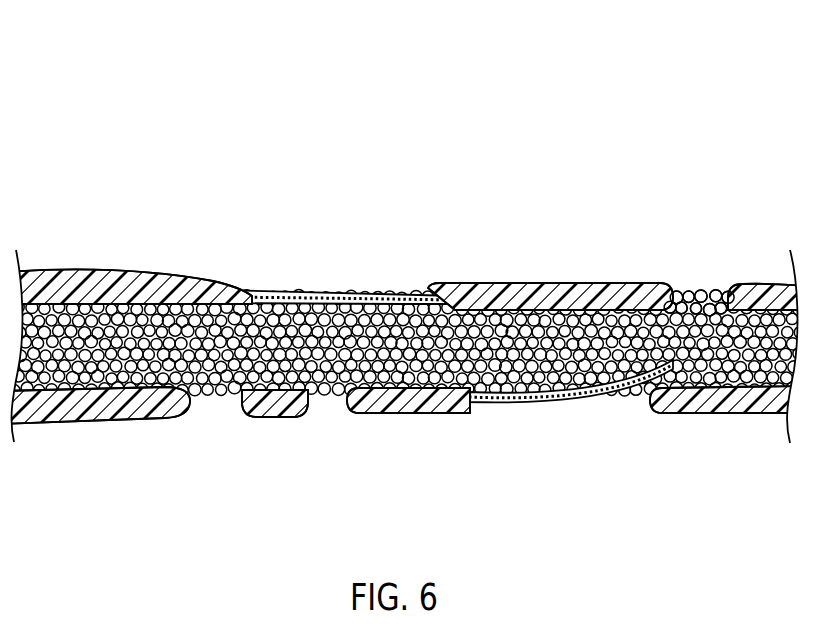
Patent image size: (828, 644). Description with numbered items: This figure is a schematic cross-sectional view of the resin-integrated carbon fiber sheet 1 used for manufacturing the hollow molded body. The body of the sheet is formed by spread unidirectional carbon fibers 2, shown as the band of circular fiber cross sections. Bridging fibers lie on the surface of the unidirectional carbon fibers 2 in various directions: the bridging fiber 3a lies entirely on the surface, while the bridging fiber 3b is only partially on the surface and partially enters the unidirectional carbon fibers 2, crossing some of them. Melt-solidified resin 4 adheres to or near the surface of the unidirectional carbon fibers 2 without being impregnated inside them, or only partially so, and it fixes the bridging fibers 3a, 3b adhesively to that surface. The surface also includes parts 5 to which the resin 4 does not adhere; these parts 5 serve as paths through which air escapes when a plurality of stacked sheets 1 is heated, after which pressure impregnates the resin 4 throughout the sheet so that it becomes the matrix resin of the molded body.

The resin-integrated carbon fiber sheet 1 is at (414, 245).
The unidirectional carbon fibers 2 is at (754, 292).
The bridging fiber 3a is at (335, 291).
The bridging fiber 3b is at (573, 402).
The resin 4 is at (550, 292).
The parts to which the resin does not adhere 5 is at (730, 282).